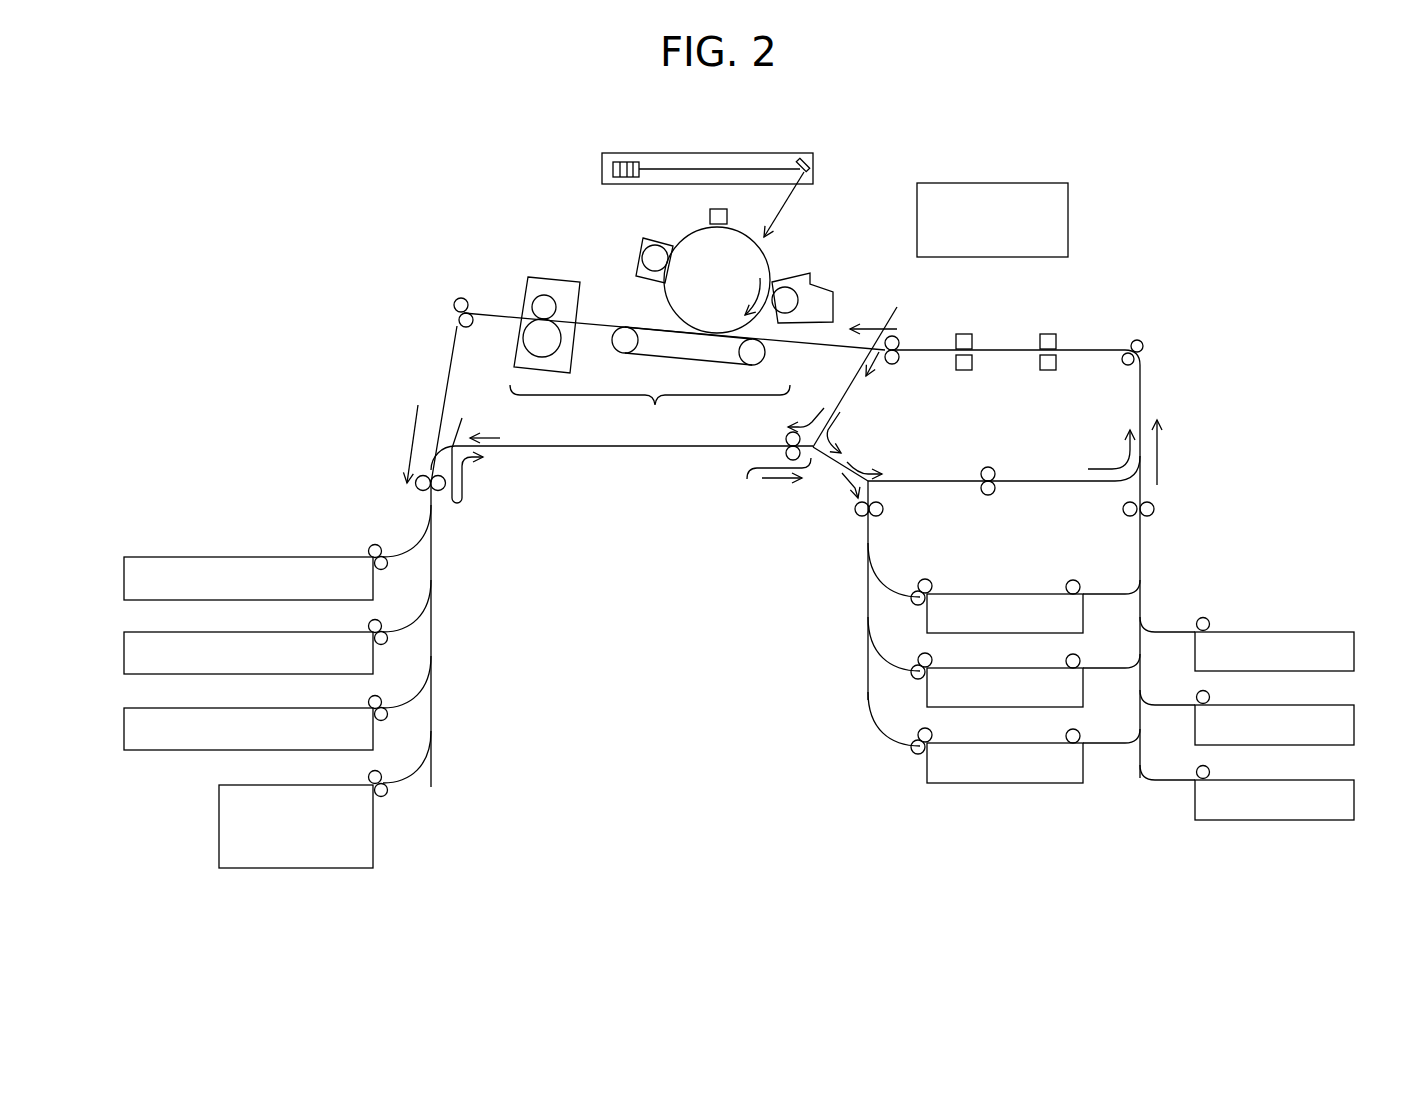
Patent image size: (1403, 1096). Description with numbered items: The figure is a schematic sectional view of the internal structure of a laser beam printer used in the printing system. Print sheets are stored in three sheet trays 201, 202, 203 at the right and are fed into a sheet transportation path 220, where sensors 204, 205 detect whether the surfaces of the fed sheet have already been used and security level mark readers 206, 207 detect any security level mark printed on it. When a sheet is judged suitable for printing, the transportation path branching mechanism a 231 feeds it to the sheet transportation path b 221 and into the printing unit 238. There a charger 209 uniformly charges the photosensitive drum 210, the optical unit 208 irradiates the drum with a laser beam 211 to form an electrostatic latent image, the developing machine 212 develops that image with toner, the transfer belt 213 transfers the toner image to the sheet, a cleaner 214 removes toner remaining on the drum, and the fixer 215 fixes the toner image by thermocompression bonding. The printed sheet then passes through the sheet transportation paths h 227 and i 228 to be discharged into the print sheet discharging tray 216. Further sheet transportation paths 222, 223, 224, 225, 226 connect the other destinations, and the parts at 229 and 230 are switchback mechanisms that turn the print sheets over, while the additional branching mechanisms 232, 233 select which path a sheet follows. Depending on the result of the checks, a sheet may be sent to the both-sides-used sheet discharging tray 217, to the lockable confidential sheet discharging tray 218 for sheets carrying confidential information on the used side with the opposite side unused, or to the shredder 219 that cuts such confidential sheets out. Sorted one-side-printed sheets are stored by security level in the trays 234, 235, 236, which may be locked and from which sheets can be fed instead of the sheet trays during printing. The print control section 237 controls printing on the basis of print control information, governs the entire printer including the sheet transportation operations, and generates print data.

The sheet tray 201 is at (1258, 632).
The sheet tray 202 is at (1258, 705).
The sheet tray 203 is at (1258, 780).
The sensor 204 is at (1048, 334).
The sensor 205 is at (1049, 370).
The security level mark reader 206 is at (964, 334).
The security level mark reader 207 is at (965, 370).
The optical unit 208 is at (743, 153).
The charger 209 is at (710, 214).
The photosensitive drum 210 is at (752, 259).
The laser beam 211 is at (789, 197).
The developing machine 212 is at (833, 296).
The transfer belt 213 is at (688, 348).
The cleaner 214 is at (642, 239).
The fixer 215 is at (530, 284).
The print sheet discharging tray 216 is at (252, 557).
The both-sides-used sheet discharging tray 217 is at (252, 632).
The confidential sheet discharging tray 218 is at (252, 708).
The shredder 219 is at (252, 785).
The sheet transportation path 220 is at (1143, 375).
The sheet transportation path b 221 is at (777, 344).
The sheet transportation path 222 is at (852, 384).
The sheet transportation path 223 is at (688, 446).
The sheet transportation path 224 is at (852, 462).
The sheet transportation path 225 is at (866, 532).
The sheet transportation path 226 is at (923, 481).
The sheet transportation path h 227 is at (448, 366).
The sheet transportation path i 228 is at (428, 505).
The switchback mechanism 229 is at (748, 481).
The switchback mechanism 230 is at (465, 484).
The transportation path branching mechanism a 231 is at (881, 363).
The sheet transportation path branching mechanism 232 is at (818, 462).
The sheet transportation path branching mechanism 233 is at (878, 488).
The tray by security level 234 is at (976, 594).
The tray by security level 235 is at (976, 668).
The tray by security level 236 is at (976, 743).
The print control section 237 is at (1070, 218).
The printing unit 238 is at (650, 408).